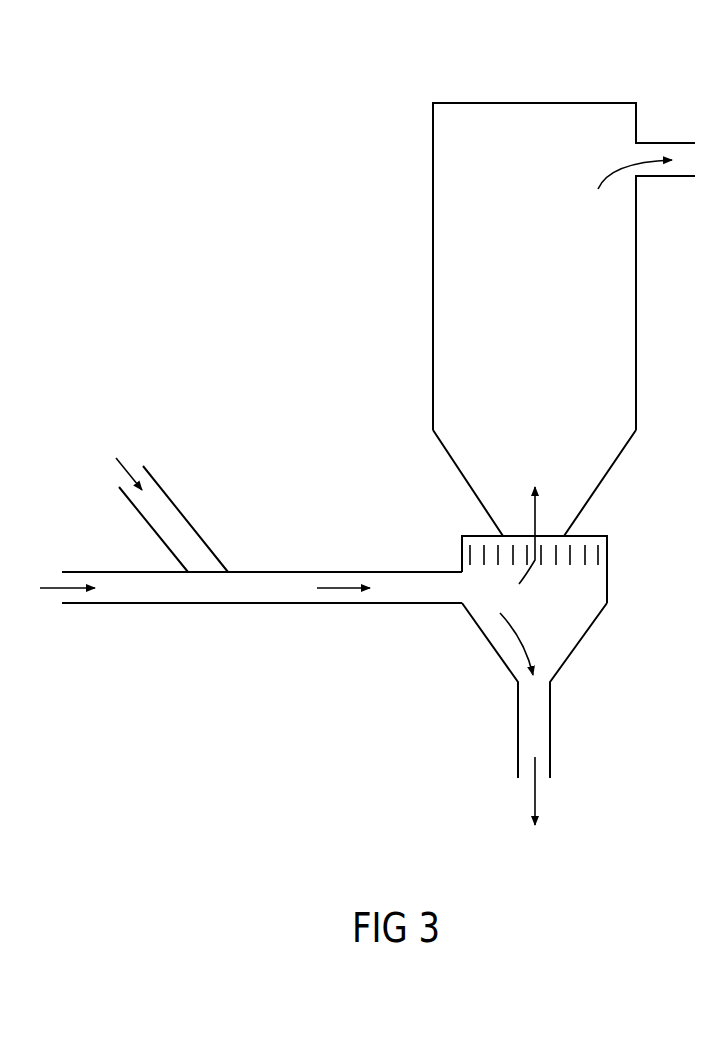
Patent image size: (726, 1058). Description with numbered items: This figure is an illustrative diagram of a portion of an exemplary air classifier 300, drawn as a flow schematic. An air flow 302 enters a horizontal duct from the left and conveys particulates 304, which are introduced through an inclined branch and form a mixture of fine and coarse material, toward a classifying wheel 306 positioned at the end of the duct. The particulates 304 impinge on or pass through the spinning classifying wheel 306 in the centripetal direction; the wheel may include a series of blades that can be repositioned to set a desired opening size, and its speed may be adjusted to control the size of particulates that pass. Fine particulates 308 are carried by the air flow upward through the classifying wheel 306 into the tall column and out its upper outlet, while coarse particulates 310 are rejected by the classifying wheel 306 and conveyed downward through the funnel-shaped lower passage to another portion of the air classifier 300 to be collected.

The air classifier 300 is at (218, 62).
The air flow 302 is at (43, 588).
The particulates 304 is at (118, 458).
The classifying wheel 306 is at (620, 560).
The fine particulates 308 is at (532, 515).
The course particulates 310 is at (540, 797).